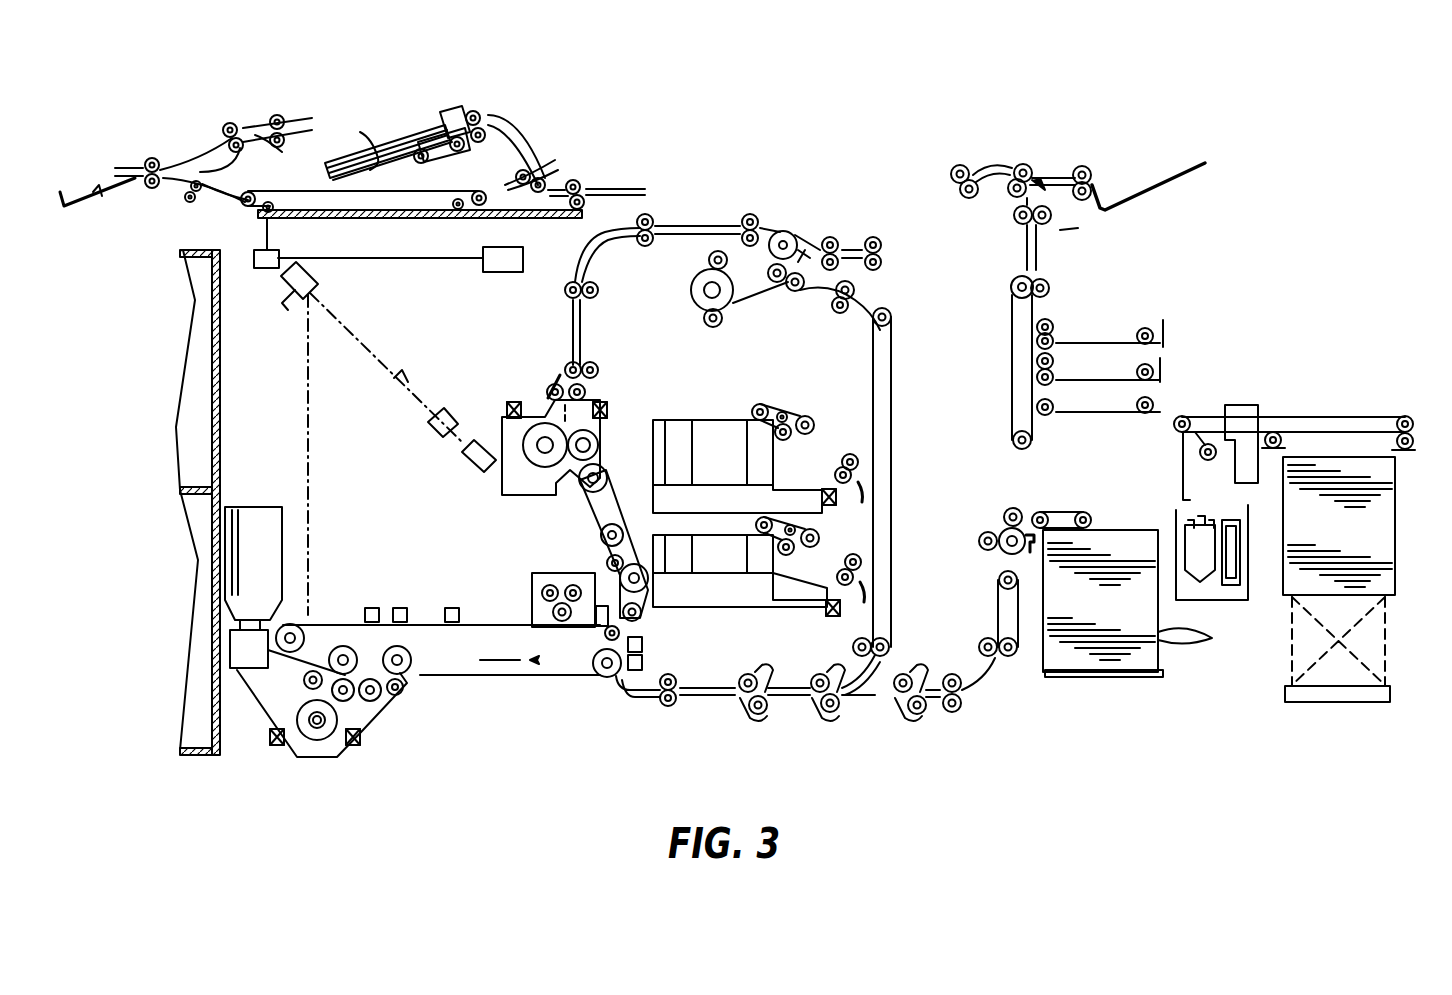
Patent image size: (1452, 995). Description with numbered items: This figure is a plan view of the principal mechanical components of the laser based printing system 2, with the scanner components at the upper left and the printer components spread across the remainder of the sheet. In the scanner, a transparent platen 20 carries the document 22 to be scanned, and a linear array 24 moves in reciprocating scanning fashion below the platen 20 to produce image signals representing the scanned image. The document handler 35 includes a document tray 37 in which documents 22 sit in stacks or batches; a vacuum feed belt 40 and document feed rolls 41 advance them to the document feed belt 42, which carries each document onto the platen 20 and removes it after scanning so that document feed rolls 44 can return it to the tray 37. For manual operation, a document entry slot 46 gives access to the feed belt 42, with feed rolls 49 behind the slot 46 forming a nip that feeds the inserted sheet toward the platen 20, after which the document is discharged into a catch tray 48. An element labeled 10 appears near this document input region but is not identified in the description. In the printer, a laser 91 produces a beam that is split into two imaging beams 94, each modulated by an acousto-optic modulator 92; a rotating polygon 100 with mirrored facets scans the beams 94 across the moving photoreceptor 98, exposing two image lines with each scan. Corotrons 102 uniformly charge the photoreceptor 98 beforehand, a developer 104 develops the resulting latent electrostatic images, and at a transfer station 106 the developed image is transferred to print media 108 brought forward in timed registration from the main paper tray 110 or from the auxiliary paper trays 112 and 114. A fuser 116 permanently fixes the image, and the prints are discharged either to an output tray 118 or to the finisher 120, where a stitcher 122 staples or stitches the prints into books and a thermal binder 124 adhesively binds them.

The printing system 2 is at (770, 140).
The input feeder 10 is at (178, 140).
The transparent platen 20 is at (415, 218).
The document 22 is at (382, 136).
The linear array 24 is at (256, 248).
The document handler 35 is at (385, 120).
The document tray 37 is at (372, 165).
The vacuum feed belt 40 is at (466, 150).
The document feed rolls 41 is at (480, 115).
The document feed belt 42 is at (425, 190).
The document feed rolls 44 is at (244, 148).
The catch tray 48 is at (118, 195).
The feed rolls 49 is at (575, 178).
The document entry slot 46 is at (605, 184).
The laser 91 is at (472, 478).
The acousto-optic modulator 92 is at (446, 408).
The imaging beams 94 is at (410, 372).
The photoreceptor 98 is at (480, 622).
The rotating polygon 100 is at (296, 302).
The corotrons 102 is at (452, 612).
The developer 104 is at (388, 712).
The transfer station 106 is at (608, 698).
The print media 108 is at (1205, 640).
The main paper tray 110 is at (1082, 678).
The auxiliary paper tray 112 is at (707, 607).
The auxiliary paper tray 114 is at (708, 420).
The fuser 116 is at (620, 425).
The output tray 118 is at (1180, 178).
The finisher 120 is at (1230, 340).
The stitcher 122 is at (1162, 358).
The thermal binder 124 is at (1320, 405).